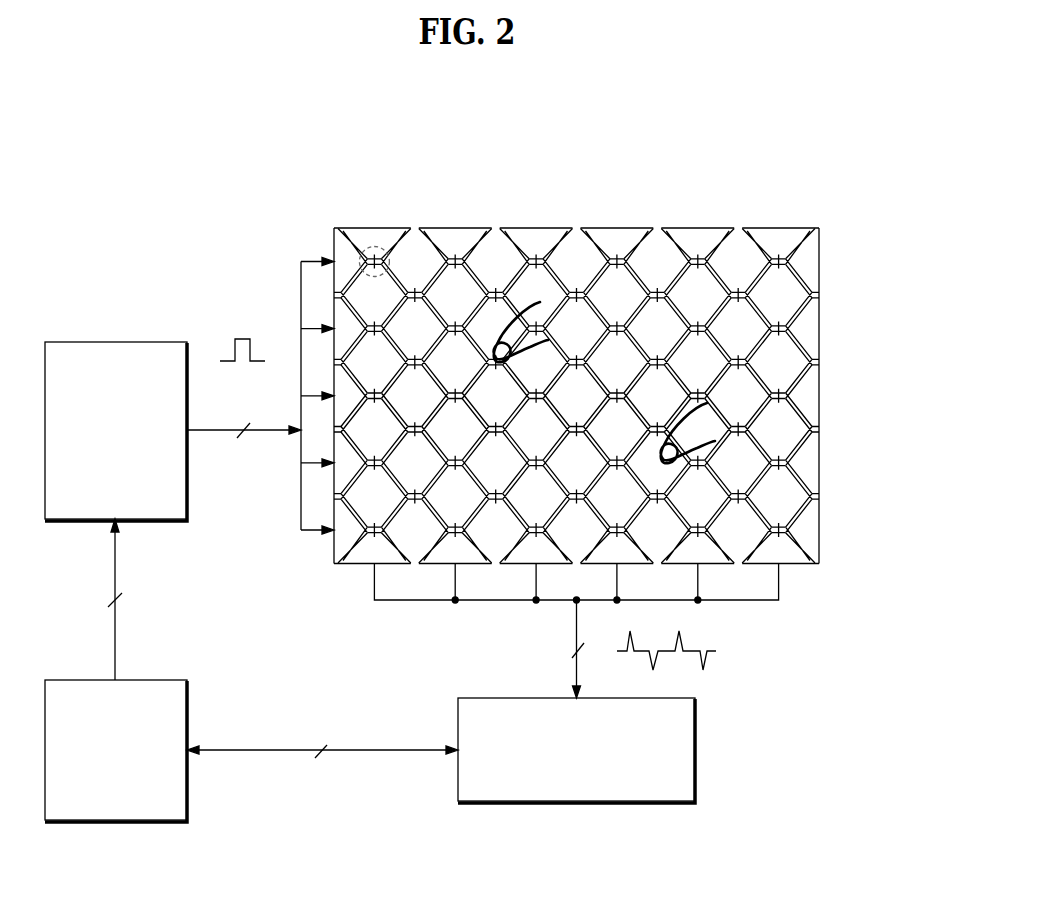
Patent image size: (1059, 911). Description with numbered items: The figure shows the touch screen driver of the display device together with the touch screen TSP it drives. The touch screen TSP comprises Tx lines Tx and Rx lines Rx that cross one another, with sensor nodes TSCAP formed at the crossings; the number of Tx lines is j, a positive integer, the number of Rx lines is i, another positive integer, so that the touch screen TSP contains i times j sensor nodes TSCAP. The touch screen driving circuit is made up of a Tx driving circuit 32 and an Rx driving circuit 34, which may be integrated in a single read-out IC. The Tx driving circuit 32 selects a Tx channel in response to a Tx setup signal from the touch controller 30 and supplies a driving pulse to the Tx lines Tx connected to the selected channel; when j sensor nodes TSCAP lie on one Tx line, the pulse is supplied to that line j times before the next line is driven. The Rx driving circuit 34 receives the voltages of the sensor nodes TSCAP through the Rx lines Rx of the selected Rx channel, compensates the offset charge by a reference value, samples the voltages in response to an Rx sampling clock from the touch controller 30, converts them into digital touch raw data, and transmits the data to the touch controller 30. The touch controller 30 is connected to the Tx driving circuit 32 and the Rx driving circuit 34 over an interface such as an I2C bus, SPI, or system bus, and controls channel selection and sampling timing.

The touch controller 30 is at (101, 763).
The Tx driving circuit 32 is at (101, 443).
The Rx driving circuit 34 is at (562, 762).
The touch screen TSP is at (722, 172).
The sensor nodes TSCAP is at (362, 260).
The Rx lines Rx is at (819, 217).
The Tx lines Tx is at (828, 228).
The number of Rx lines i is at (571, 649).
The number of Tx lines j is at (244, 417).